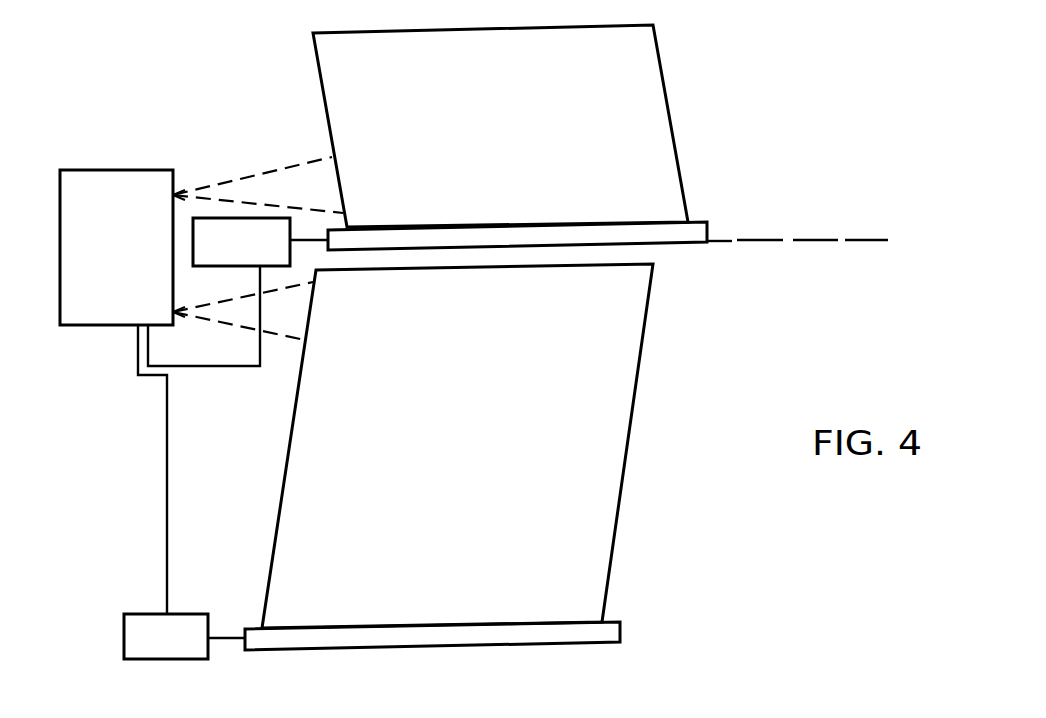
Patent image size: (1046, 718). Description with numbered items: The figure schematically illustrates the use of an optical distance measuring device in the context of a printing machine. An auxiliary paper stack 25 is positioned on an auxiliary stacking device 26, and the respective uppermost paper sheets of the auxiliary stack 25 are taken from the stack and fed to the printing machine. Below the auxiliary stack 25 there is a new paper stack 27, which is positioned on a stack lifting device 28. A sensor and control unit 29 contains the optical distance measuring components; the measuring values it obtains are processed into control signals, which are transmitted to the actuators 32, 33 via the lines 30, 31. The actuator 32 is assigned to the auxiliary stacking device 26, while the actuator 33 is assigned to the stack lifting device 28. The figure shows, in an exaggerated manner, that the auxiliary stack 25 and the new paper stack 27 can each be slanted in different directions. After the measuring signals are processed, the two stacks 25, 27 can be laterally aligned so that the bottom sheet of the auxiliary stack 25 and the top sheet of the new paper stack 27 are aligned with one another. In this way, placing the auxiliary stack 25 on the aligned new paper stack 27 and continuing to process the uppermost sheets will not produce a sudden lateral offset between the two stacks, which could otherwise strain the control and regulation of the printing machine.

The auxiliary paper stack 25 is at (650, 146).
The auxiliary stacking device 26 is at (695, 237).
The new paper stack 27 is at (602, 493).
The stack lifting device 28 is at (610, 632).
The sensor and control unit 29 is at (137, 197).
The line 30 is at (233, 367).
The line 31 is at (167, 499).
The actuator 32 is at (257, 227).
The actuator 33 is at (121, 635).